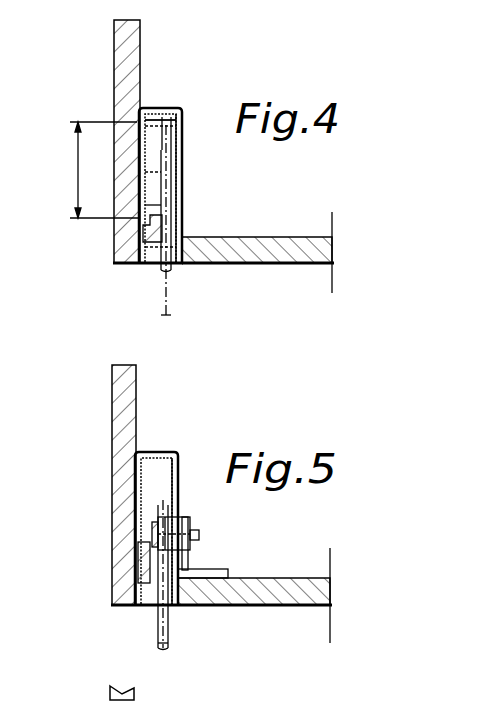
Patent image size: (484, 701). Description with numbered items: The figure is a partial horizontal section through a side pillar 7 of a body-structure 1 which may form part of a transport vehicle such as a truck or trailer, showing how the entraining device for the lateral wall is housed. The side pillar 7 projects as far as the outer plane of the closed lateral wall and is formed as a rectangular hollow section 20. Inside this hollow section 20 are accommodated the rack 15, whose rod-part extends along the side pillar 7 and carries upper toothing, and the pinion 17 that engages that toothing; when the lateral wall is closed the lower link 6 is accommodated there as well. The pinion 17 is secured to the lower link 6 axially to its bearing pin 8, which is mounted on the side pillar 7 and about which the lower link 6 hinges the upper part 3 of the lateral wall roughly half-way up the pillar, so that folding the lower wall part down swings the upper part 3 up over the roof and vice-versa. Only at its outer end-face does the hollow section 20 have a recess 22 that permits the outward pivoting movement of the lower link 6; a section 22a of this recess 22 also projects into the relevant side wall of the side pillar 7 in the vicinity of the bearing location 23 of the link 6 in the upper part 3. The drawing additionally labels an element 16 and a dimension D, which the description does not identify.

In FIG. 4, the body-structure 1 is at (112, 93).
In FIG. 5, the body-structure 1 is at (110, 449).
In FIG. 4, the upper part 3 is at (290, 252).
In FIG. 5, the upper part 3 is at (290, 596).
In FIG. 4, the lower link 6 is at (182, 200).
In FIG. 5, the lower link 6 is at (172, 517).
In FIG. 4, the side pillar 7 is at (165, 108).
In FIG. 5, the side pillar 7 is at (147, 452).
In FIG. 4, the bearing pin 8 is at (185, 172).
In FIG. 4, the rack 15 is at (147, 265).
In FIG. 5, the rack 15 is at (143, 610).
In FIG. 4, the wall portion 16 is at (143, 205).
In FIG. 4, the pinion 17 is at (155, 108).
In FIG. 4, the rectangular hollow section 20 is at (180, 112).
In FIG. 5, the rectangular hollow section 20 is at (178, 456).
In FIG. 4, the recess 22 is at (178, 268).
In FIG. 5, the recess 22 is at (158, 617).
In FIG. 5, the section of recess 22a is at (195, 566).
In FIG. 5, the bearing location 23 is at (190, 518).
In FIG. 4, the distance D is at (99, 170).